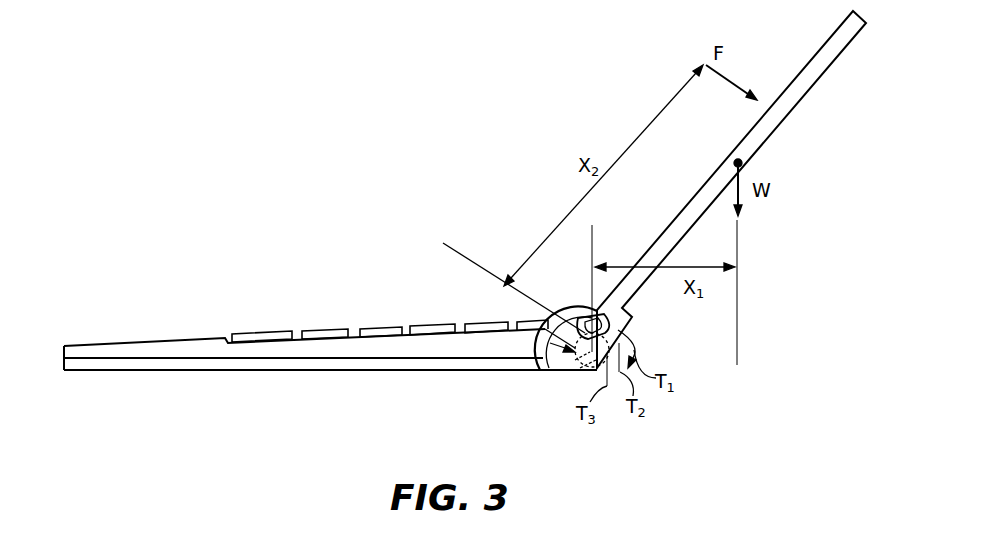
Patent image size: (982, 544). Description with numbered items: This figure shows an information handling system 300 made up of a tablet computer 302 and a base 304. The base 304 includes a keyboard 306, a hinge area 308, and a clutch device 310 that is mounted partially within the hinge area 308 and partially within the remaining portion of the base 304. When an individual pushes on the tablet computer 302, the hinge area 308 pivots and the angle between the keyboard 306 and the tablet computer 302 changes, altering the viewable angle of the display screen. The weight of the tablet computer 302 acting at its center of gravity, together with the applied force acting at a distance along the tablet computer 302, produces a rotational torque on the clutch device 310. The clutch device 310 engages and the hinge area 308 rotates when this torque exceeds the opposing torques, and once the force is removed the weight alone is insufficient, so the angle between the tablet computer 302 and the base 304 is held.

The information handling system 300 is at (463, 72).
The tablet computer 302 is at (774, 138).
The base 304 is at (174, 342).
The keyboard 306 is at (332, 315).
The hinge area 308 is at (628, 321).
The clutch device 310 is at (579, 369).